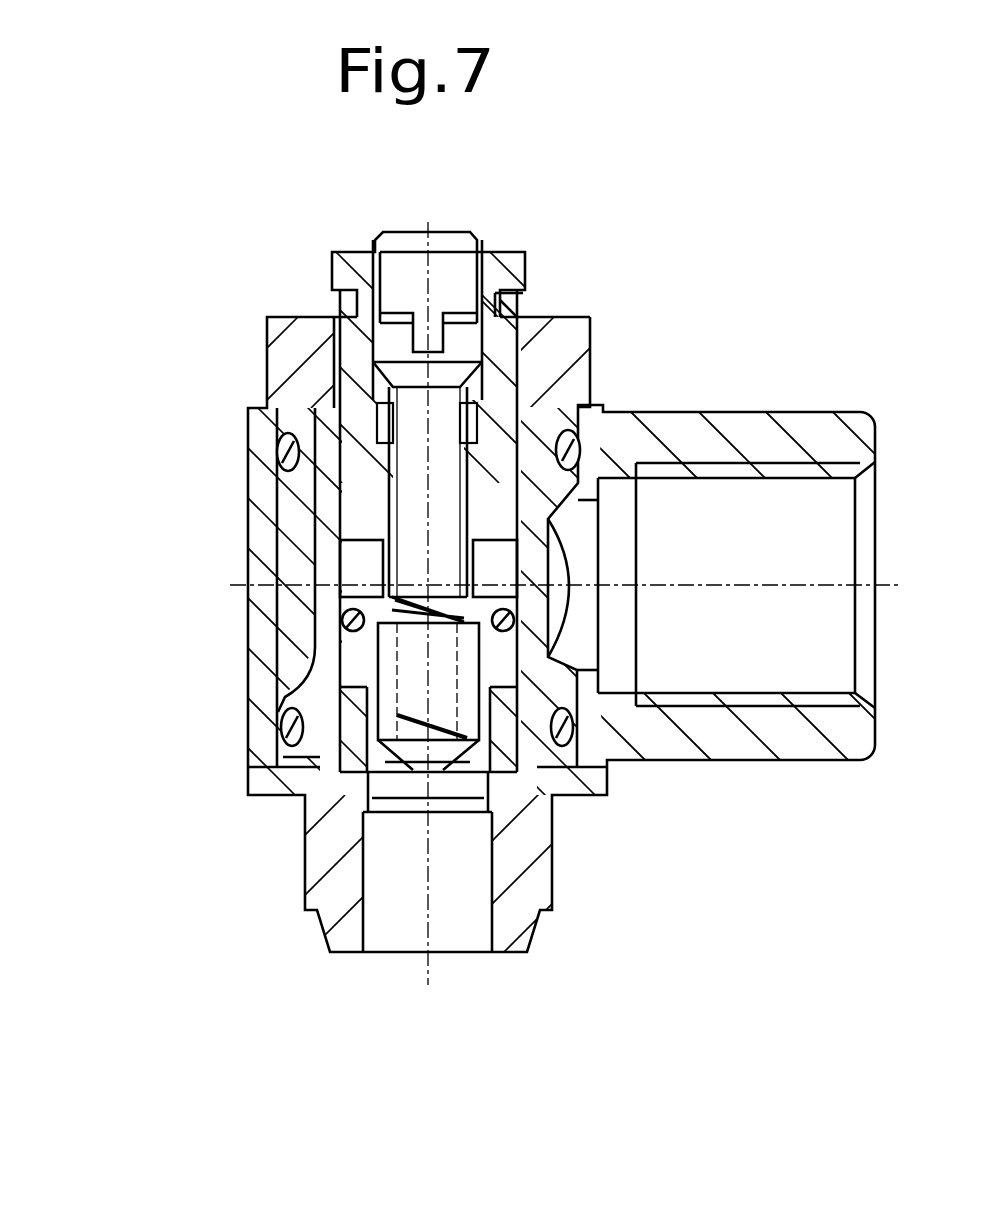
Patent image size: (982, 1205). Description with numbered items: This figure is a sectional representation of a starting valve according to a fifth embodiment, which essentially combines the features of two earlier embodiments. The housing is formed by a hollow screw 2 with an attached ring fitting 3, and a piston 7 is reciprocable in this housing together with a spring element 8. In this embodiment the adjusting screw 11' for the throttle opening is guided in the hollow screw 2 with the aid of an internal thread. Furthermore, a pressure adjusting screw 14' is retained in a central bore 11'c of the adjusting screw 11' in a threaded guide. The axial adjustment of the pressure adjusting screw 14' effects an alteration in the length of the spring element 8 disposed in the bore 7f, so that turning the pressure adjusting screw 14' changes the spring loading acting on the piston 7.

The hollow screw 2 is at (308, 392).
The ring fitting 3 is at (652, 736).
The piston 7 is at (425, 488).
The bore 7f is at (367, 660).
The spring element 8 is at (345, 615).
The adjusting screw 11' is at (541, 316).
The central bore 11'c is at (667, 343).
The pressure adjusting screw 14' is at (266, 322).